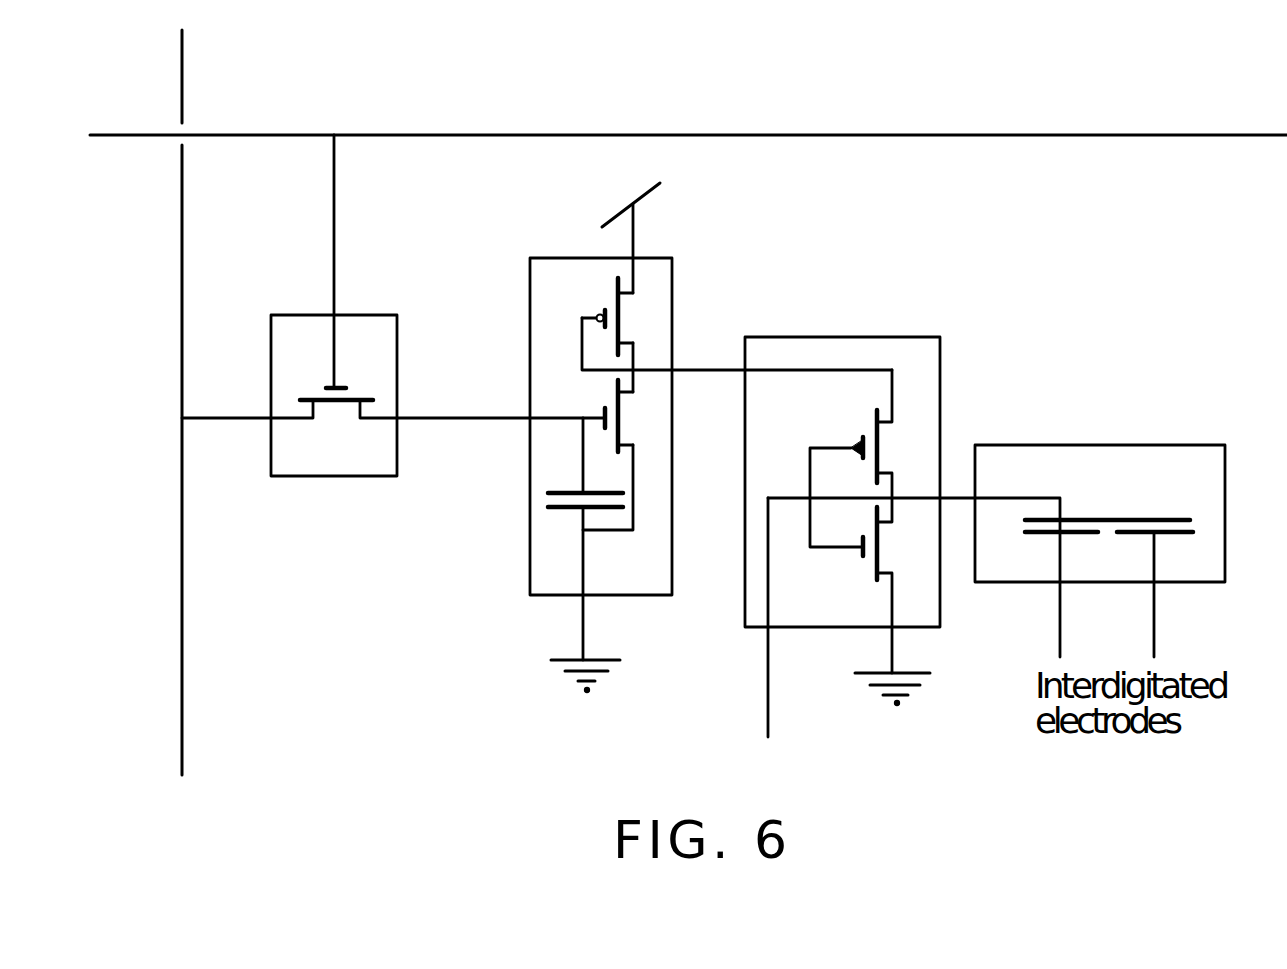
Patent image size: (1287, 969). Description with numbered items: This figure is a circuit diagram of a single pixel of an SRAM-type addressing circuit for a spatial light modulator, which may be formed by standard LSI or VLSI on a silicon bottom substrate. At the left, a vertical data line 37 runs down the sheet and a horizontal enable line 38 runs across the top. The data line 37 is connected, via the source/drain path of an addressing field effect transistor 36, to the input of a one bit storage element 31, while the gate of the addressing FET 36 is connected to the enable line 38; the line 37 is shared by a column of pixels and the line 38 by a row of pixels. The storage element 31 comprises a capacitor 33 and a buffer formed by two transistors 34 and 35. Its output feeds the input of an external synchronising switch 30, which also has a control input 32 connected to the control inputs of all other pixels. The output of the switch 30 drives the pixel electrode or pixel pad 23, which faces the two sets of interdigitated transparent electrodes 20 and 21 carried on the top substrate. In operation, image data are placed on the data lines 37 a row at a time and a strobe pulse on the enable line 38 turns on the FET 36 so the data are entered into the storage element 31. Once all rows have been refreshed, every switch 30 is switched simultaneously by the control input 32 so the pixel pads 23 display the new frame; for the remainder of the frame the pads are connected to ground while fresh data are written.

The enable line 38 is at (420, 135).
The data line 37 is at (186, 685).
The addressing field effect transistor 36 is at (397, 455).
The one bit storage element 31 is at (645, 595).
The transistor 34 is at (628, 318).
The transistor 35 is at (625, 418).
The capacitor 33 is at (560, 515).
The external synchronising switch 30 is at (906, 337).
The control input 32 is at (768, 690).
The pixel pad 23 is at (1093, 513).
The interdigitated transparent electrode 20 is at (1047, 540).
The interdigitated transparent electrode 21 is at (1172, 538).